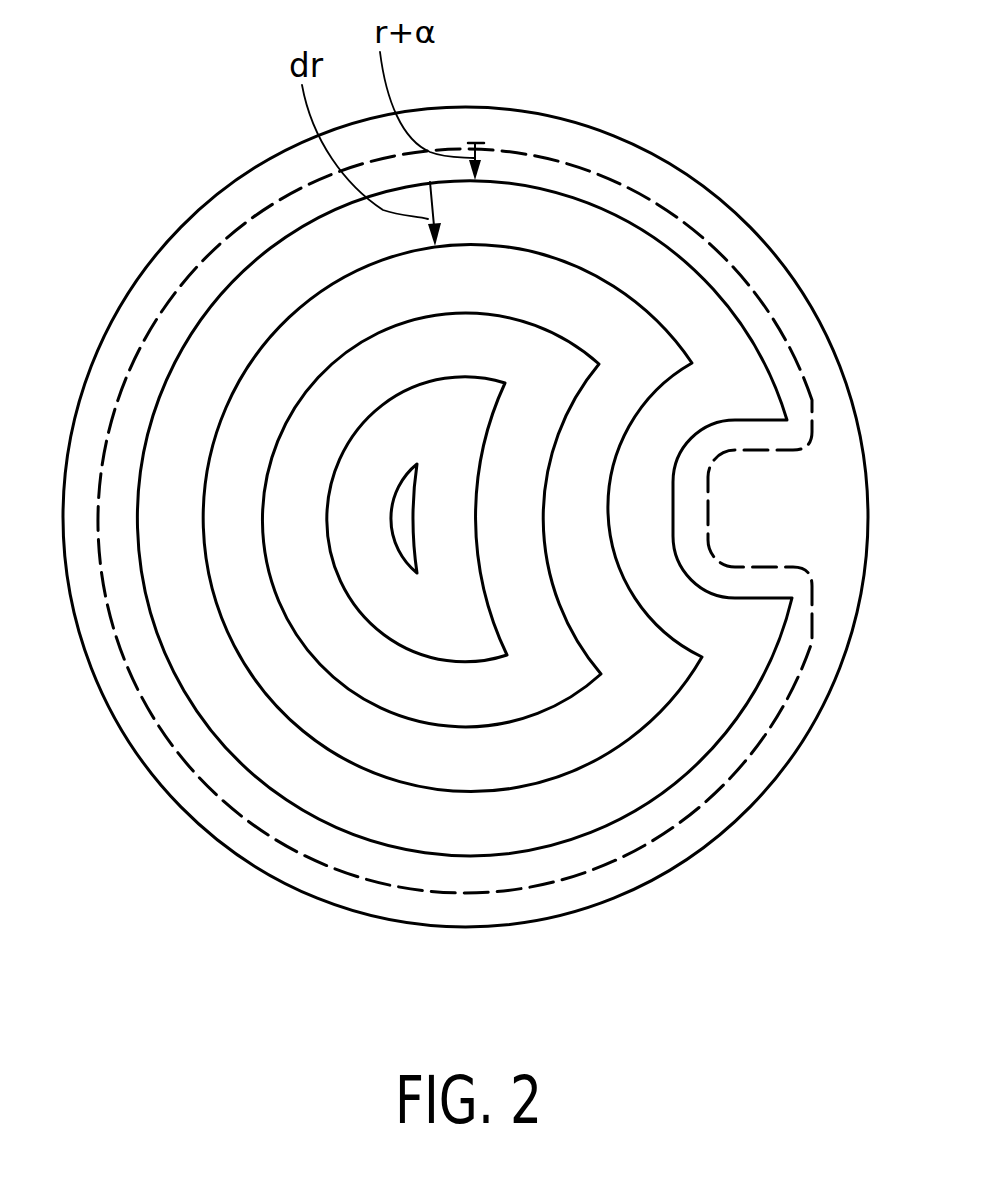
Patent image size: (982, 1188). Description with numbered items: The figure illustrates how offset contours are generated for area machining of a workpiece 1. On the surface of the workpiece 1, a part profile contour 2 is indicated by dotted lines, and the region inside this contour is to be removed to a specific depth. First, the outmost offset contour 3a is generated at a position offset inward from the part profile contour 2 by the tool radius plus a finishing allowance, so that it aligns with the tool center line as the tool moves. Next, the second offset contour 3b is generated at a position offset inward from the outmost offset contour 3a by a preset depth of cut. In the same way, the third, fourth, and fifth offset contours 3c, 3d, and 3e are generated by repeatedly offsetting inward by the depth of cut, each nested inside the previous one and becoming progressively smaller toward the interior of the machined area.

The workpiece 1 is at (608, 133).
The part profile contour 2 is at (697, 223).
The outmost offset contour 3a is at (713, 287).
The second offset contour 3b is at (693, 364).
The third offset contour 3c is at (360, 342).
The fourth offset contour 3d is at (357, 421).
The fifth offset contour 3e is at (390, 513).